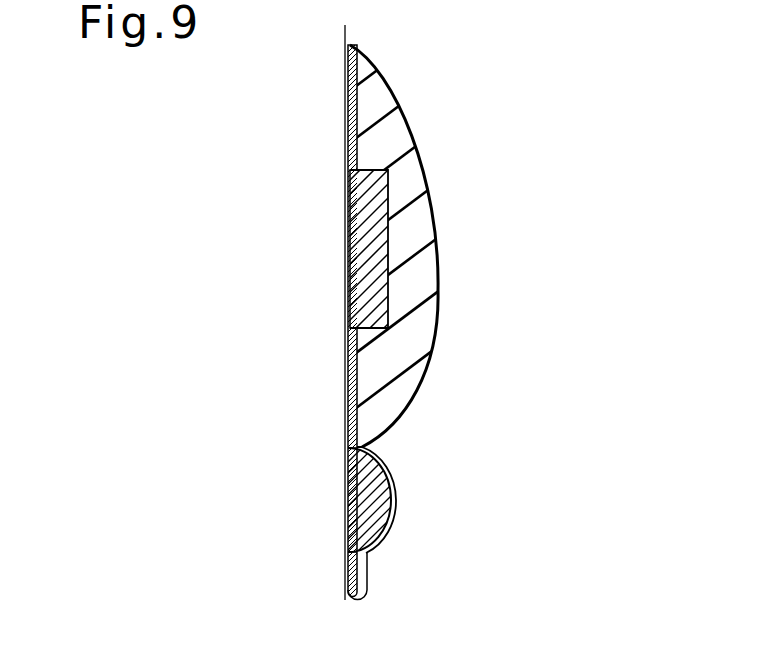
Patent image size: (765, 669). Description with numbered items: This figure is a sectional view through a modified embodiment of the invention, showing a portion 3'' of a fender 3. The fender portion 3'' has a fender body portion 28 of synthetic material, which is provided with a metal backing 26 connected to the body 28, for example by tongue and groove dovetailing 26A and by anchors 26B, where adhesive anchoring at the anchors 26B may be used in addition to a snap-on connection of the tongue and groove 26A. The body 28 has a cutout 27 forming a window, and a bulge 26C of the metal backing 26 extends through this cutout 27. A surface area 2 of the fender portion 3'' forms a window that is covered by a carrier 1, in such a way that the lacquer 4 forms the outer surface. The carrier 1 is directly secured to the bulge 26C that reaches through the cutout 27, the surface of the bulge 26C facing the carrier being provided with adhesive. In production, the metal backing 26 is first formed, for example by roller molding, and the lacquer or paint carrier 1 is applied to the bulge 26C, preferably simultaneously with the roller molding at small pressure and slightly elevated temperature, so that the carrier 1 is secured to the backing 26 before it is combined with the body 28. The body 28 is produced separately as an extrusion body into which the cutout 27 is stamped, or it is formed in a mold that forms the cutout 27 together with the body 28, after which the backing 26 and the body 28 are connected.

The fender 3 is at (365, 314).
The fender portion 3'' is at (390, 314).
The fender body portion 28 is at (413, 213).
The metal backing 26 is at (350, 207).
The tongue and groove dovetailing 26A is at (383, 243).
The anchors 26B is at (350, 104).
The bulge 26C is at (363, 499).
The cutout 27 is at (362, 447).
The carrier 1 is at (395, 470).
The surface area 2 is at (397, 500).
The lacquer 4 is at (390, 530).